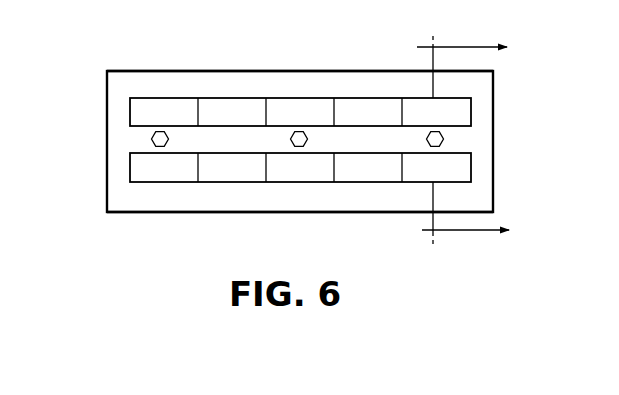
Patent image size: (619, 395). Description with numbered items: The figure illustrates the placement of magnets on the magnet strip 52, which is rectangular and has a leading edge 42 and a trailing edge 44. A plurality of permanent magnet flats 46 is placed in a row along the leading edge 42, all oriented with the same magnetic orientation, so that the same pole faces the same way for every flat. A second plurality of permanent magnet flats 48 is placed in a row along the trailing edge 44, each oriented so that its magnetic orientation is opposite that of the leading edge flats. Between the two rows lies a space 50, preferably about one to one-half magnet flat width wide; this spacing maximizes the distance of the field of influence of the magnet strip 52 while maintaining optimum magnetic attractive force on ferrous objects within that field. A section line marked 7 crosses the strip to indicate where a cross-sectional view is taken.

The leading edge 42 is at (197, 70).
The trailing edge 44 is at (215, 213).
The permanent magnet flats 46 is at (234, 70).
The permanent magnet flats 48 is at (288, 214).
The space 50 is at (450, 138).
The magnet strip 52 is at (101, 157).
The section line 7- 7 is at (471, 137).